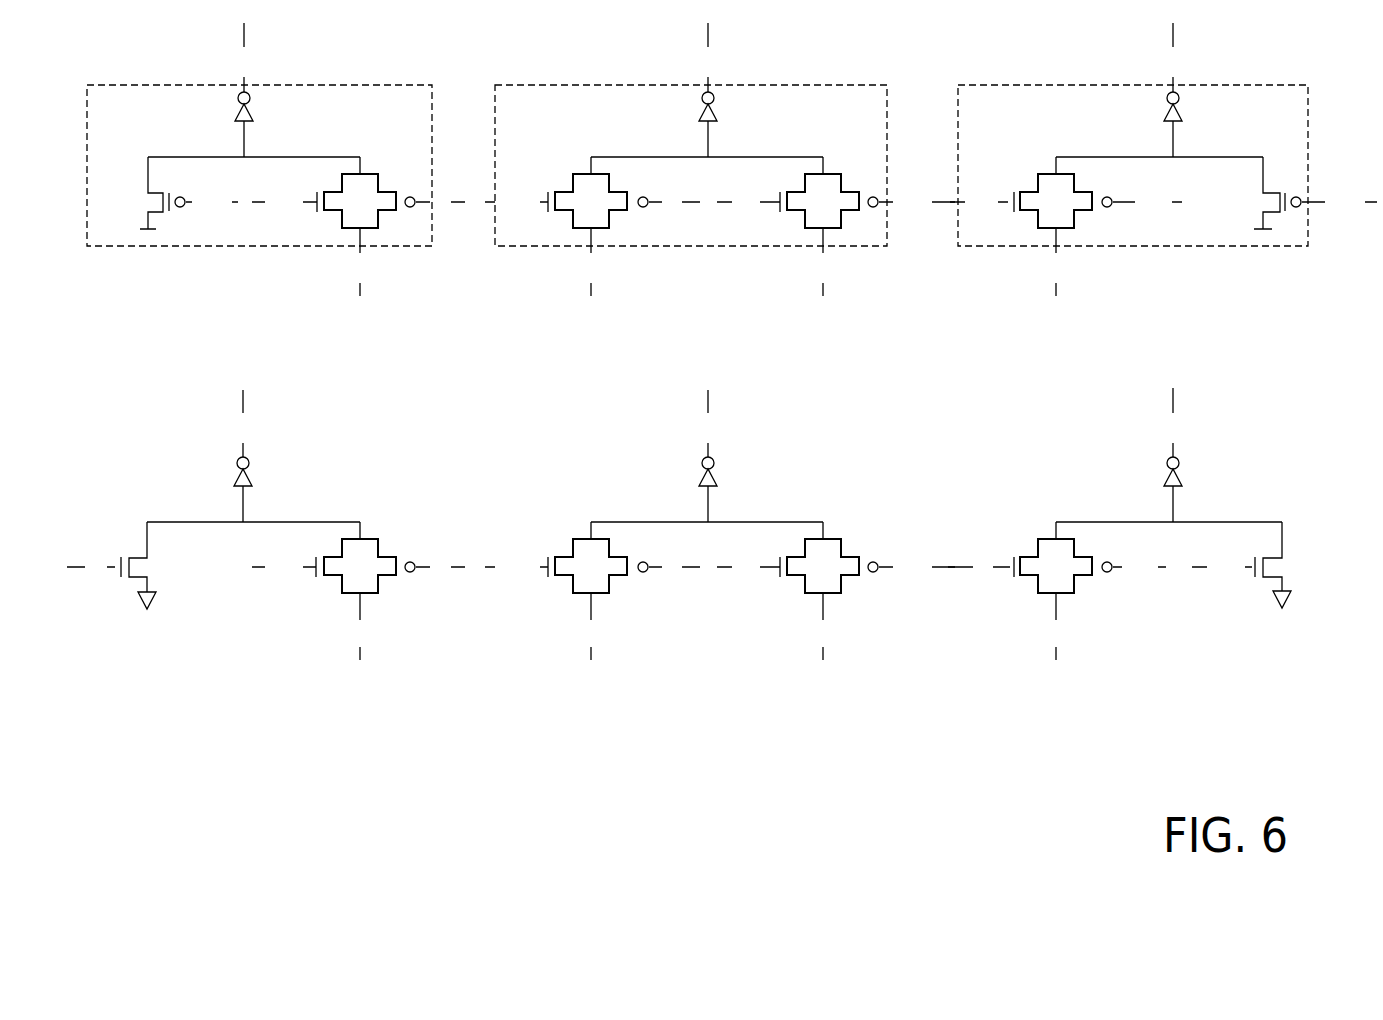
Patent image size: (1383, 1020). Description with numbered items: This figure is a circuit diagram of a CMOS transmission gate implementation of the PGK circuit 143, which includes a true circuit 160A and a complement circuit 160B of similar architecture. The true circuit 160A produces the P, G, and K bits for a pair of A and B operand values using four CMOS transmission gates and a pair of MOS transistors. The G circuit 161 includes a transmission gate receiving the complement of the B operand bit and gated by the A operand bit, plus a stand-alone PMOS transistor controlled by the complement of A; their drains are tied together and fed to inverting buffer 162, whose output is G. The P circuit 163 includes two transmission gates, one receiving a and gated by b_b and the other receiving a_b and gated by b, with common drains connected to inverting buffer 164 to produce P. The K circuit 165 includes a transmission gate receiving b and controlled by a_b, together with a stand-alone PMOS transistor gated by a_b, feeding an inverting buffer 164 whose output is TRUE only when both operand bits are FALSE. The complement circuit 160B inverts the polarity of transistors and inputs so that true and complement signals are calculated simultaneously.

The PGK circuit 143 is at (722, 402).
The true circuit 160A is at (732, 178).
The complement circuit 160B is at (1262, 362).
The G circuit 161 is at (975, 126).
The inverting buffer 162 is at (1167, 109).
The P circuit 163 is at (513, 126).
The inverting buffer 164 is at (252, 112).
The K circuit 165 is at (105, 126).